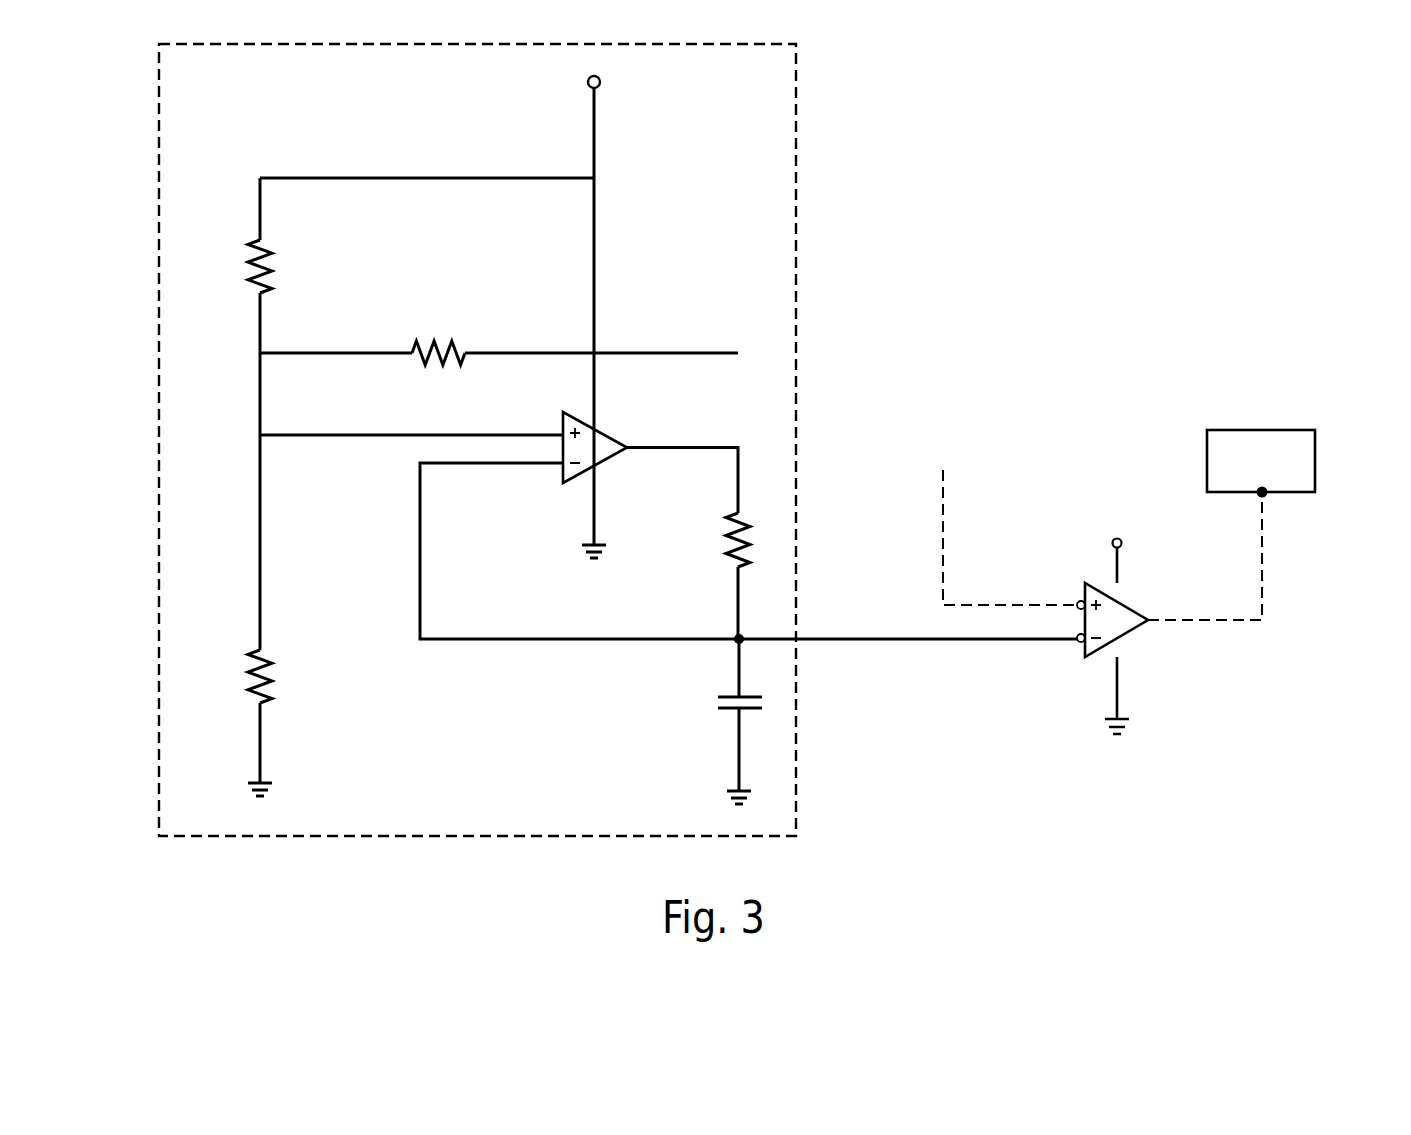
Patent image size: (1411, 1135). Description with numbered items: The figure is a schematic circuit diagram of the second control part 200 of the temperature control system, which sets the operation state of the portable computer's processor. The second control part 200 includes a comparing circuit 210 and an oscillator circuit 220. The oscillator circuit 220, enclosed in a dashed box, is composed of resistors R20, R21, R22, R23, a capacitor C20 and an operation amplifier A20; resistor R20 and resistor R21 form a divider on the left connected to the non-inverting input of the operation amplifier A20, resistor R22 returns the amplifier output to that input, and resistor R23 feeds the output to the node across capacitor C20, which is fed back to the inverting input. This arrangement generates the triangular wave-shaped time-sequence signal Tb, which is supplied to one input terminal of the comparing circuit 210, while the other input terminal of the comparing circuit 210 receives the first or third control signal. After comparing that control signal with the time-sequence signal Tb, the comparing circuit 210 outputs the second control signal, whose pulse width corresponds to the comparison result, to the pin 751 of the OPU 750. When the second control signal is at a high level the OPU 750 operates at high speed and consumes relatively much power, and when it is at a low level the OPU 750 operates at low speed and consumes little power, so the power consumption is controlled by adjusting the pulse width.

The second control part 200 is at (959, 181).
The oscillator circuit 220 is at (177, 179).
The comparing circuit 210 is at (1124, 624).
The operation processing unit (OPU) 750 is at (1308, 458).
The pin 751 is at (1268, 497).
The resistor R20 is at (280, 266).
The resistor R21 is at (281, 676).
The resistor R22 is at (499, 332).
The resistor R23 is at (720, 540).
The operation amplifier A20 is at (602, 437).
The capacitor C20 is at (720, 721).